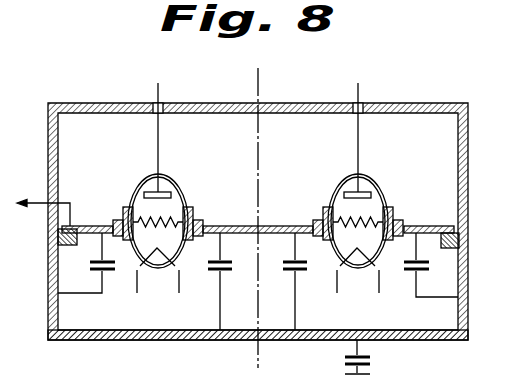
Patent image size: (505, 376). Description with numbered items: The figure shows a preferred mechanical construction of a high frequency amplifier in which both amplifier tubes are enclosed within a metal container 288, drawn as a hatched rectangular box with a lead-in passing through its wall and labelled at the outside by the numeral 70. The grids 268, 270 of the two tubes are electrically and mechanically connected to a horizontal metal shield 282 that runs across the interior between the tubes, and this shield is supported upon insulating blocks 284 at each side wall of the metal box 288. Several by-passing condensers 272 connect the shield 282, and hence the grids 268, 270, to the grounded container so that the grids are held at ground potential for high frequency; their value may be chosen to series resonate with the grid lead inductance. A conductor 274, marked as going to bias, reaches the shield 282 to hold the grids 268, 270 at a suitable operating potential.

The housing 70 is at (274, 221).
The grid 268 is at (144, 222).
The grid 270 is at (370, 222).
The by-passing condenser 272 is at (102, 273).
The conductor 274 is at (38, 202).
The metal shield 282 is at (218, 225).
The insulating block 284 is at (60, 247).
The metal container 288 is at (170, 342).